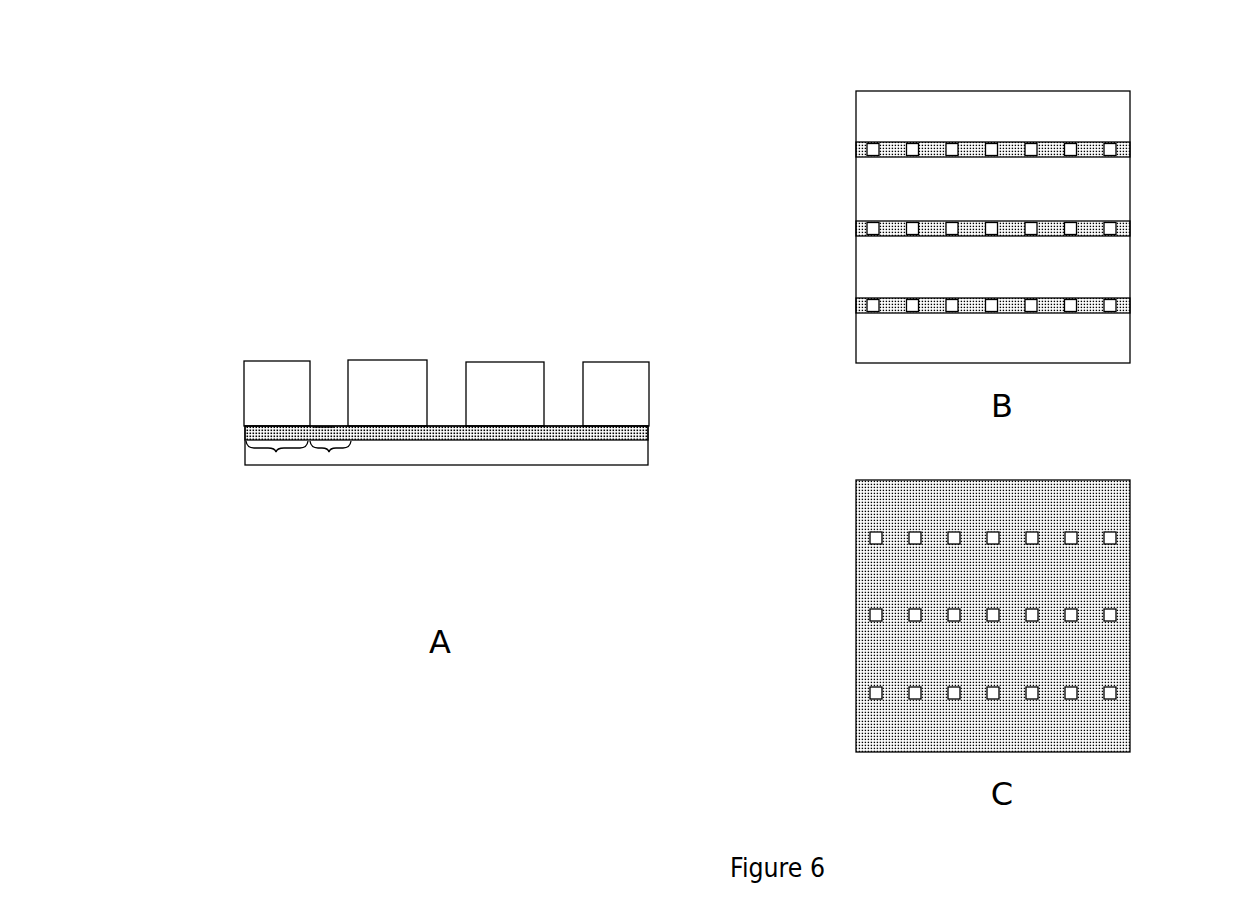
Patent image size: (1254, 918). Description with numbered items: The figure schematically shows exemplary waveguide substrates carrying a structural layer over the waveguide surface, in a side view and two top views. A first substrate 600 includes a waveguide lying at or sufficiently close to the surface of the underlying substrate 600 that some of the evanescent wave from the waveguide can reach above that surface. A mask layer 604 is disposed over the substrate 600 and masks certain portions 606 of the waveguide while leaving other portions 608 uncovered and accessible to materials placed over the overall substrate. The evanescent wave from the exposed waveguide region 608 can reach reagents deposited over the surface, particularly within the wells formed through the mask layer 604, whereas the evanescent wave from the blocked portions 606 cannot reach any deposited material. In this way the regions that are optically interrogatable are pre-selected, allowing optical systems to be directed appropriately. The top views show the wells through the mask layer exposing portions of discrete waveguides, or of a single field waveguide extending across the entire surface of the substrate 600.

The substrate 600 is at (243, 452).
The mask layer 604 is at (400, 373).
The masked portions of the waveguide 606 is at (276, 453).
The exposed waveguide region 608 is at (329, 453).